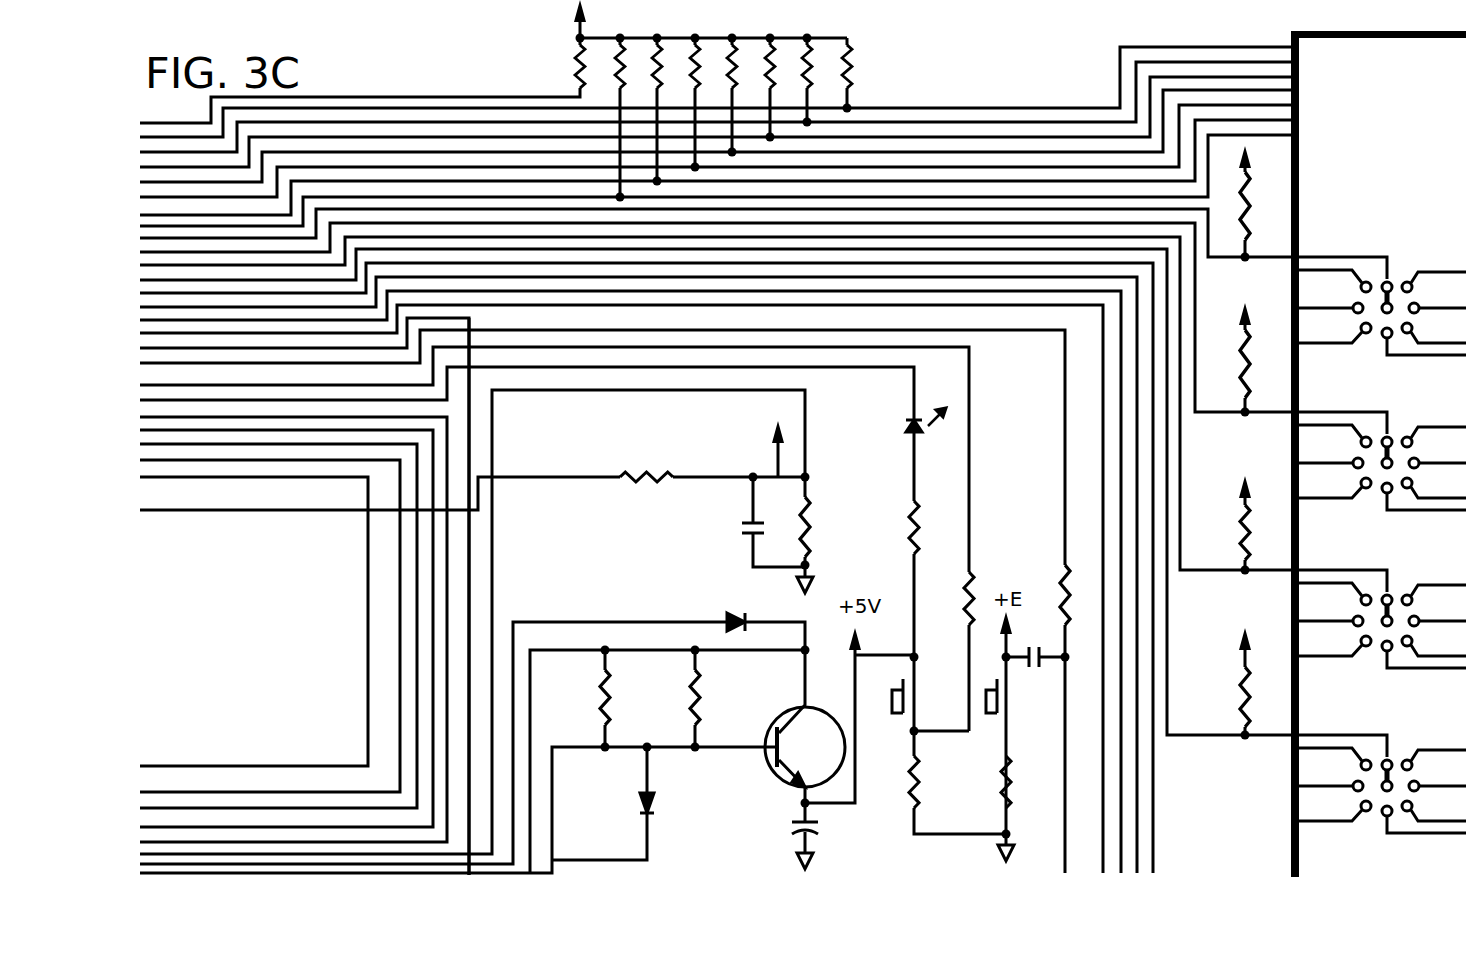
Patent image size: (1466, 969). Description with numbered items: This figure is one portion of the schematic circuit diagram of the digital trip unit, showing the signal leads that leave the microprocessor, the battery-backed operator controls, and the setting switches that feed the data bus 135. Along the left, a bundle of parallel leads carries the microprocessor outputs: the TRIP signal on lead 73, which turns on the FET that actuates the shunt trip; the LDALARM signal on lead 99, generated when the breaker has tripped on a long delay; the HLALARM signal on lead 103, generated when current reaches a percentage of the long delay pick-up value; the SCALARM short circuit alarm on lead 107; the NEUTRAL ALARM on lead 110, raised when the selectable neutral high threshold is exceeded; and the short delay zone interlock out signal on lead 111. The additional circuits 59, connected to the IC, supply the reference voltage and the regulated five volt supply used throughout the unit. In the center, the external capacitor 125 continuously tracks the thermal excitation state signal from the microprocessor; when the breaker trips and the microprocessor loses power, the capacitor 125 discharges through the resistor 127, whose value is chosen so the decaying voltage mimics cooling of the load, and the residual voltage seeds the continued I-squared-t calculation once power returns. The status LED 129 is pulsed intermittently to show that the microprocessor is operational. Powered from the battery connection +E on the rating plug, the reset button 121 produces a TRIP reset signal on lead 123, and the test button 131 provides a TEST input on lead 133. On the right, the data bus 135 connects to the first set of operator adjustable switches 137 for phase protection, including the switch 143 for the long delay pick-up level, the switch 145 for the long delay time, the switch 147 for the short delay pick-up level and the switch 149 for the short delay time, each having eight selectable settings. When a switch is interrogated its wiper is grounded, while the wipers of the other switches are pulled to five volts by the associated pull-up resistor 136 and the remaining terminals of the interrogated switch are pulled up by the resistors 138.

The additional circuits 59 is at (680, 806).
The lead 73 is at (470, 582).
The lead 99 is at (182, 792).
The lead 103 is at (197, 842).
The lead 107 is at (302, 827).
The lead 110 is at (265, 808).
The lead 111 is at (167, 766).
The reset button 121 is at (1010, 696).
The lead 123 is at (1025, 449).
The external capacitor 125 is at (740, 533).
The resistor 127 is at (810, 523).
The status LED 129 is at (912, 432).
The test button 131 is at (909, 712).
The lead 133 is at (1064, 540).
The data bus 135 is at (1291, 36).
The pull-up resistor 136 is at (1252, 226).
The first set of operator adjustable switches 137 is at (1273, 471).
The pull-up resistors 138 is at (874, 62).
The switch 143 is at (1391, 282).
The switch 145 is at (1390, 437).
The switch 147 is at (1390, 596).
The switch 149 is at (1390, 760).